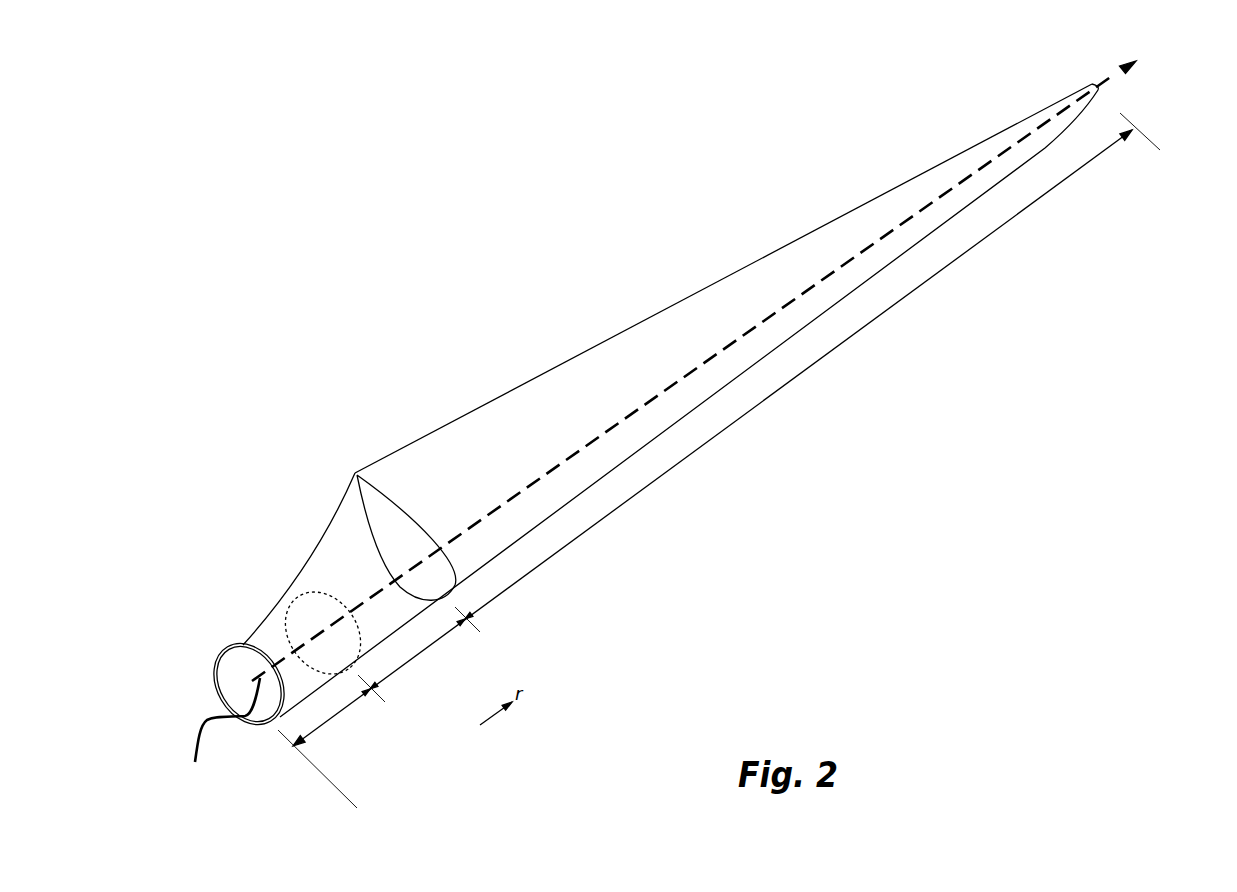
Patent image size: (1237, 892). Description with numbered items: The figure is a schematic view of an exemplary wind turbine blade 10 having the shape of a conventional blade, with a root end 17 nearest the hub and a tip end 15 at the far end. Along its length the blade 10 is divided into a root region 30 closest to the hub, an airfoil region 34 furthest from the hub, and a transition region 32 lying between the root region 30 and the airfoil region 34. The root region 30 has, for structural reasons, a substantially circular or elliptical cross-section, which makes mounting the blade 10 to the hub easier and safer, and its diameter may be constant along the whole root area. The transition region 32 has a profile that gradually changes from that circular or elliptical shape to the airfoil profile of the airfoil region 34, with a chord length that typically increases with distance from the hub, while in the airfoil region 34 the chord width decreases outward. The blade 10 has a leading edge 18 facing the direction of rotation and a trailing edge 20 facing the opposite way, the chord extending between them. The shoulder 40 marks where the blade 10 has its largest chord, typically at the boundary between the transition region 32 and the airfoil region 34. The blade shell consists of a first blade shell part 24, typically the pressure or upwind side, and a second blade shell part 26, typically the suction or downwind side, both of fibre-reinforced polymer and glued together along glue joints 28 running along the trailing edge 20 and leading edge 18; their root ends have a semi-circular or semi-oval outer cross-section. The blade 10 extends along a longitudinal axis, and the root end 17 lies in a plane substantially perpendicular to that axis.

The wind turbine blade 10 is at (702, 432).
The tip end 15 is at (1098, 87).
The root end 17 is at (247, 678).
The leading edge 18 is at (833, 307).
The trailing edge 20 is at (715, 280).
The first blade shell part 24 is at (243, 641).
The second blade shell part 26 is at (240, 718).
The glue joints 28 is at (233, 643).
The root region 30 is at (337, 714).
The transition region 32 is at (422, 647).
The airfoil region 34 is at (733, 423).
The shoulder 40 is at (357, 475).